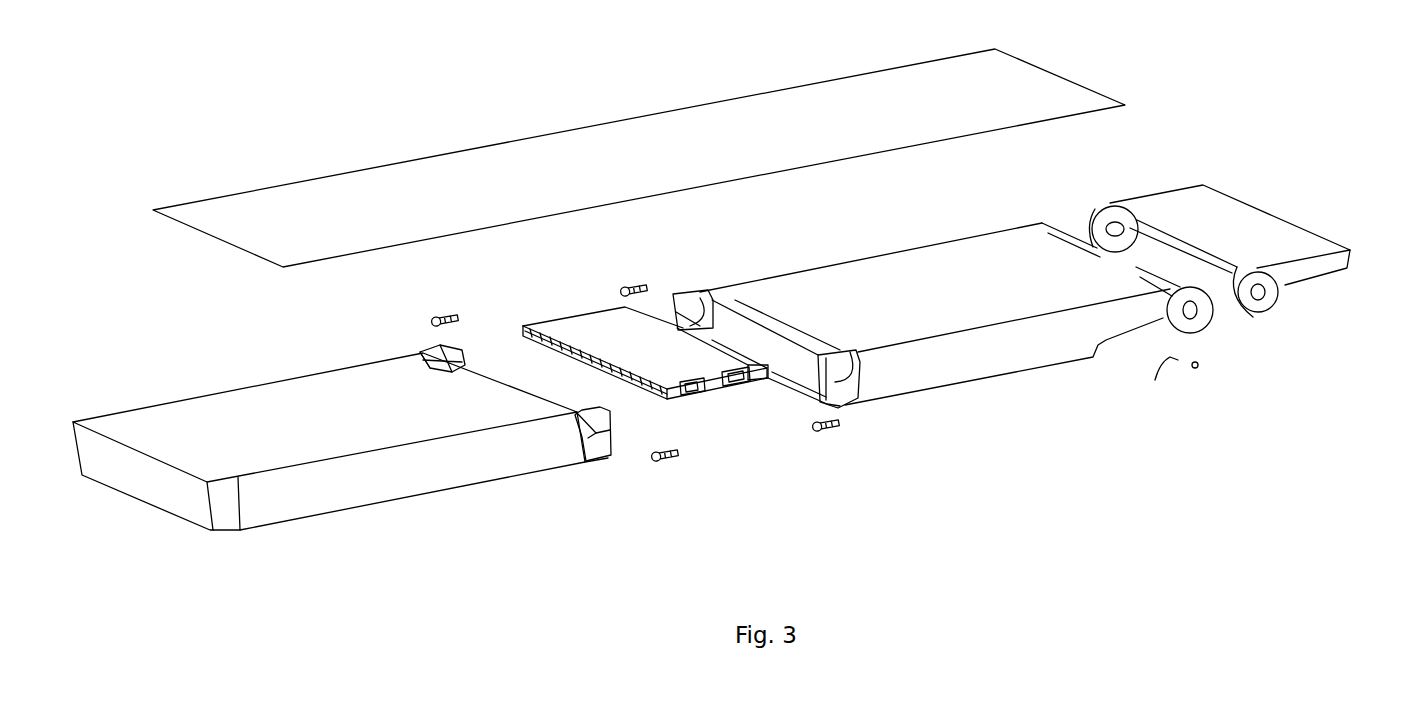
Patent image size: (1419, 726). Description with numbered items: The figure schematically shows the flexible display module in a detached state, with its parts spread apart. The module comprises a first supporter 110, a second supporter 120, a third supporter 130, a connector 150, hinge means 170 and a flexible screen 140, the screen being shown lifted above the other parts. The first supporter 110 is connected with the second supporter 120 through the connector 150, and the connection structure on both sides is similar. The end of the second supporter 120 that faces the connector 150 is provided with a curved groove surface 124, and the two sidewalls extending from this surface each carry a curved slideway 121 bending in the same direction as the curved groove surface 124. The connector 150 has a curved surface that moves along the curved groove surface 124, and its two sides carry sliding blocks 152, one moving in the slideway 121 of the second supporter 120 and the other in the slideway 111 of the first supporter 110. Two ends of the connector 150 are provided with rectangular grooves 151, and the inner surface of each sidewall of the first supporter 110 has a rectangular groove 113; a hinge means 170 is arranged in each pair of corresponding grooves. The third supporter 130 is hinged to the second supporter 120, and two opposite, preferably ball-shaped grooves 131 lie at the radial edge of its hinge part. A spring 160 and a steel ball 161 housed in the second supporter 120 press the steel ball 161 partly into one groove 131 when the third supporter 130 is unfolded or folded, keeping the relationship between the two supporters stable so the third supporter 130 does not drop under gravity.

The first supporter 110 is at (415, 465).
The slideway 111 is at (580, 440).
The rectangular groove 113 is at (442, 350).
The second supporter 120 is at (1018, 347).
The slideway 121 is at (865, 375).
The curved groove surface 124 is at (795, 352).
The third supporter 130 is at (1300, 267).
The groove 131 is at (1090, 220).
The flexible screen 140 is at (1028, 88).
The connector 150 is at (568, 328).
The rectangular groove 151 is at (744, 386).
The sliding block 152 is at (683, 387).
The spring 160 is at (1168, 375).
The steel ball 161 is at (1196, 370).
The hinge means 170 is at (457, 312).